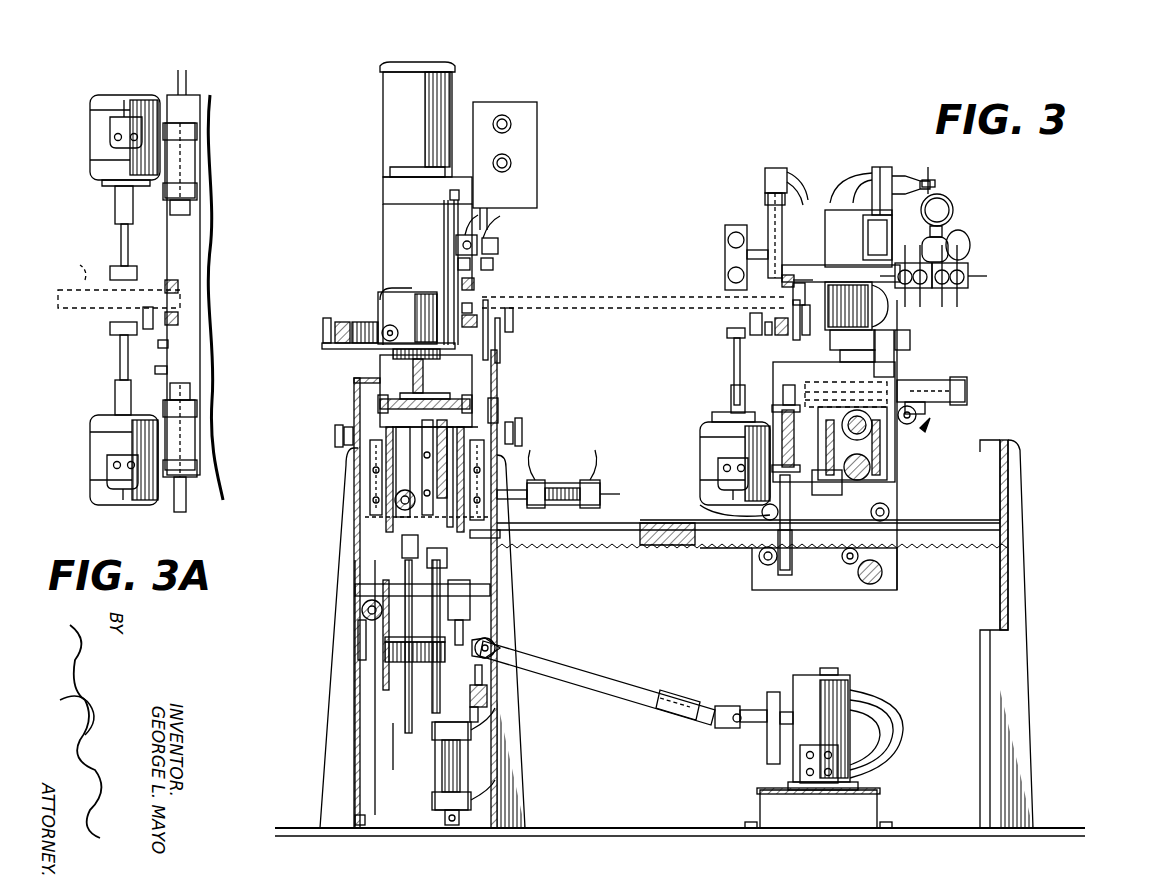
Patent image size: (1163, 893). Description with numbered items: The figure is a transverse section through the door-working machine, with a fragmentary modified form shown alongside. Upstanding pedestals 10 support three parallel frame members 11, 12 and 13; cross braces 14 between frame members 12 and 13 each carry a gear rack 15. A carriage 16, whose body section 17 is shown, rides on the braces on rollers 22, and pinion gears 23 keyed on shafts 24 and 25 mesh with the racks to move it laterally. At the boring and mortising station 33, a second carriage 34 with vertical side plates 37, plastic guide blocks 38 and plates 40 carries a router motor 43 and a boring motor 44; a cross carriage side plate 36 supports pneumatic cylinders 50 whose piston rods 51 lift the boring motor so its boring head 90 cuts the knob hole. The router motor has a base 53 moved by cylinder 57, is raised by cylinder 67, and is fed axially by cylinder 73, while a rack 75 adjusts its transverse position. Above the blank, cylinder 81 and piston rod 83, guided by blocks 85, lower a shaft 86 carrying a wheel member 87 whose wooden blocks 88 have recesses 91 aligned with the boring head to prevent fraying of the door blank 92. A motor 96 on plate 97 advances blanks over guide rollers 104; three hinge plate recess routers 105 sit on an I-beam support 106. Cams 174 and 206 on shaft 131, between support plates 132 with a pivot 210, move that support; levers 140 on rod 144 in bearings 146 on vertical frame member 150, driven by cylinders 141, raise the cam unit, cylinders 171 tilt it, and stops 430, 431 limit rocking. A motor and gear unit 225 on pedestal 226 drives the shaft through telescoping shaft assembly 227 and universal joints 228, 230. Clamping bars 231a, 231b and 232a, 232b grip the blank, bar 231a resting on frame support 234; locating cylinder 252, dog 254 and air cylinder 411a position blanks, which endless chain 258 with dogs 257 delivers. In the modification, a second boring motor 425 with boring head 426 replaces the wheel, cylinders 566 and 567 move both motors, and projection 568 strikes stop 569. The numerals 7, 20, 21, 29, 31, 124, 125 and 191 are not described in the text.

In FIG. 3, the bag carrier 7 is at (393, 382).
In FIG. 3, the upstanding pedestal 10 is at (346, 458).
In FIG. 3, the frame member 11 is at (354, 410).
In FIG. 3, the frame member 12 is at (498, 410).
In FIG. 3, the frame member 13 is at (1000, 482).
In FIG. 3, the cross brace 14 is at (965, 540).
In FIG. 3, the gear rack 15 is at (708, 548).
In FIG. 3, the carriage 16 is at (829, 178).
In FIG. 3, the carriage body section 17 is at (800, 590).
In FIG. 3, the carriage plate 20 is at (875, 487).
In FIG. 3, the roller 21 is at (872, 585).
In FIG. 3, the roller 22 is at (890, 512).
In FIG. 3, the pinion gear 23 is at (792, 560).
In FIG. 3, the shaft 24 is at (760, 560).
In FIG. 3, the shaft 25 is at (860, 558).
In FIG. 3, the switch 29 is at (450, 194).
In FIG. 3, the control box 31 is at (540, 150).
In FIG. 3, the boring and mortising station 33 is at (376, 212).
In FIG. 3, the second carriage 34 is at (902, 347).
In FIG. 3A, the cross carriage side plate 36 is at (205, 202).
In FIG. 3, the cross carriage side plate 36 is at (734, 360).
In FIG. 3, the vertical side plate 37 is at (890, 452).
In FIG. 3, the plastic guide block 38 is at (827, 489).
In FIG. 3, the plate 40 is at (835, 395).
In FIG. 3, the router motor 43 is at (875, 323).
In FIG. 3A, the boring motor 44 is at (100, 425).
In FIG. 3, the boring motor 44 is at (712, 450).
In FIG. 3, the pneumatic cylinder 50 is at (782, 410).
In FIG. 3, the piston rod 51 is at (720, 518).
In FIG. 3, the base 53 is at (898, 353).
In FIG. 3, the pneumatic cylinder 57 is at (855, 320).
In FIG. 3, the pneumatic cylinder 67 is at (912, 358).
In FIG. 3, the pneumatic cylinder 73 is at (967, 388).
In FIG. 3, the rack 75 is at (925, 432).
In FIG. 3, the pneumatic cylinder 81 is at (776, 168).
In FIG. 3, the piston rod 83 is at (765, 225).
In FIG. 3, the plastic guide block 85 is at (786, 235).
In FIG. 3, the shaft 86 is at (747, 254).
In FIG. 3, the wheel member 87 is at (724, 240).
In FIG. 3, the wooden block 88 is at (737, 225).
In FIG. 3A, the boring head 90 is at (110, 328).
In FIG. 3, the boring head 90 is at (750, 322).
In FIG. 3, the recess 91 is at (728, 278).
In FIG. 3A, the door blank 92 is at (119, 290).
In FIG. 3, the door blank 92 is at (590, 297).
In FIG. 3, the motor 96 is at (392, 103).
In FIG. 3, the plate 97 is at (383, 247).
In FIG. 3, the guide roller 104 is at (513, 315).
In FIG. 3, the hinge plate recess router 105 is at (400, 292).
In FIG. 3, the I-beam support 106 is at (424, 372).
In FIG. 3, the cylinder 124 is at (340, 320).
In FIG. 3, the bracket 125 is at (323, 330).
In FIG. 3, the shaft 131 is at (385, 650).
In FIG. 3, the vertical support plate 132 is at (402, 540).
In FIG. 3, the lever 140 is at (470, 600).
In FIG. 3, the pneumatic cylinder 141 is at (445, 770).
In FIG. 3, the rod 144 is at (362, 609).
In FIG. 3, the bearing 146 is at (358, 632).
In FIG. 3, the vertical frame member 150 is at (355, 715).
In FIG. 3, the pneumatic cylinder 171 is at (565, 483).
In FIG. 3, the cam 174 is at (405, 680).
In FIG. 3, the slide 191 is at (395, 500).
In FIG. 3, the cam 206 is at (470, 640).
In FIG. 3, the pivot 210 is at (355, 586).
In FIG. 3, the motor and gear unit 225 is at (820, 668).
In FIG. 3, the pedestal 226 is at (760, 800).
In FIG. 3, the telescoping shaft assembly 227 is at (615, 695).
In FIG. 3, the universal joint 228 is at (745, 732).
In FIG. 3, the universal joint 230 is at (490, 680).
In FIG. 3, the lower forward clamping bar 231a is at (490, 300).
In FIG. 3, the upper forward clamping bar 231b is at (478, 280).
In FIG. 3, the rear clamping bar 232a is at (738, 337).
In FIG. 3, the rear clamping bar 232b is at (804, 278).
In FIG. 3, the frame support 234 is at (444, 228).
In FIG. 3, the cylinder 252 is at (495, 240).
In FIG. 3, the locator dog 254 is at (490, 258).
In FIG. 3, the dog 257 is at (497, 345).
In FIG. 3, the endless chain 258 is at (500, 365).
In FIG. 3, the air cylinder 411a is at (482, 222).
In FIG. 3A, the second boring motor 425 is at (140, 95).
In FIG. 3A, the boring head 426 is at (121, 232).
In FIG. 3, the adjustable stop 430 is at (335, 434).
In FIG. 3, the adjustable stop 431 is at (520, 428).
In FIG. 3A, the pneumatic cylinder 566 is at (185, 453).
In FIG. 3A, the pneumatic cylinder 567 is at (190, 158).
In FIG. 3A, the projection 568 is at (167, 370).
In FIG. 3A, the stop 569 is at (168, 344).